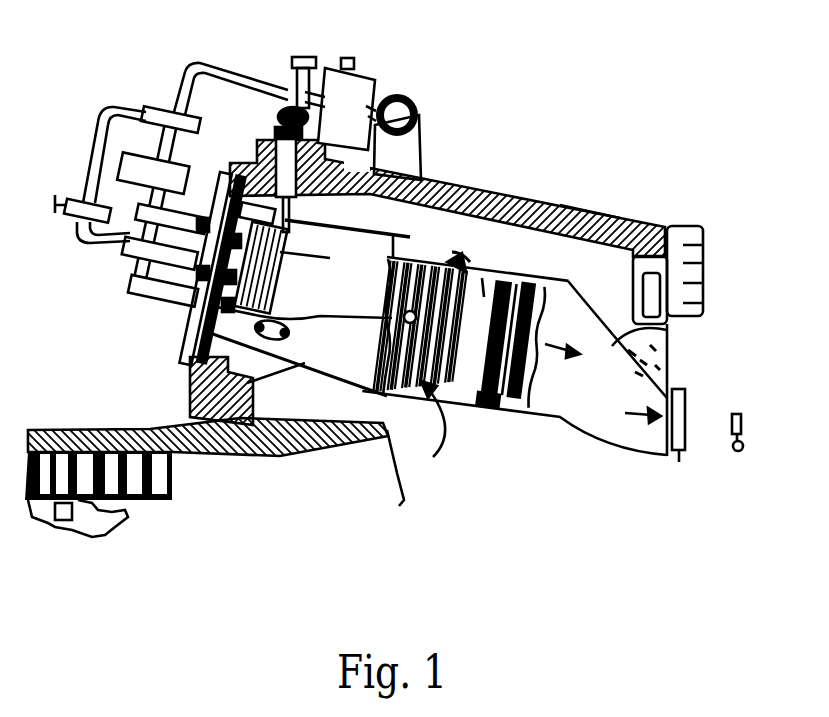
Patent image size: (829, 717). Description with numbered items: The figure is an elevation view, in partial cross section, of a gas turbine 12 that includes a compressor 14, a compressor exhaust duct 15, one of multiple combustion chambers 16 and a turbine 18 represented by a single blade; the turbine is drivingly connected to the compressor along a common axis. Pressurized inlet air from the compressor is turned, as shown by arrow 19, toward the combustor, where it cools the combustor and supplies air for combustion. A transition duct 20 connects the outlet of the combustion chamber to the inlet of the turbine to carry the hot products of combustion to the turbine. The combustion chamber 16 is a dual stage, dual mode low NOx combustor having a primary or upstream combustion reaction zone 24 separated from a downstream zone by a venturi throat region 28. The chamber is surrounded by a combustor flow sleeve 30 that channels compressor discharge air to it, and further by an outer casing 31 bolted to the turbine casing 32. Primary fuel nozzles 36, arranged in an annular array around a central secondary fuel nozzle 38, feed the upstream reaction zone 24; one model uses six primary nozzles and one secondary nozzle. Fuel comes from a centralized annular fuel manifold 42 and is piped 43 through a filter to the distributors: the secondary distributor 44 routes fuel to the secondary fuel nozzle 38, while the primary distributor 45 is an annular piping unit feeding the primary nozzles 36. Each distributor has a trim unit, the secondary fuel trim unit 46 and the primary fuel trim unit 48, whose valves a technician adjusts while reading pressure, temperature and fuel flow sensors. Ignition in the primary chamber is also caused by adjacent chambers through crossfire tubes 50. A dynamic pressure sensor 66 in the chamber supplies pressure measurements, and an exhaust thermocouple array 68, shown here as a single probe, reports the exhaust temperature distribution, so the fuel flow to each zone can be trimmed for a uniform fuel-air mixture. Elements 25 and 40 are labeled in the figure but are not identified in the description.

The gas turbine 12 is at (553, 192).
The compressor 14 is at (177, 487).
The compressor exhaust duct 15 is at (338, 484).
The combustion chamber 16 is at (388, 396).
The turbine 18 is at (688, 417).
The arrow 19 is at (433, 457).
The transition duct 20 is at (597, 397).
The primary combustion reaction zone 24 is at (305, 220).
The piston 25 is at (470, 324).
The venturi throat region 28 is at (355, 250).
The combustor flow sleeve 30 is at (421, 236).
The outer casing 31 is at (584, 211).
The turbine casing 32 is at (705, 268).
The primary fuel nozzles 36 is at (280, 263).
The secondary fuel nozzle 38 is at (214, 210).
The control valve 40 is at (325, 127).
The annular fuel manifold 42 is at (398, 92).
The fuel piping 43 is at (235, 74).
The secondary distributor 44 is at (168, 100).
The primary distributor 45 is at (127, 292).
The secondary fuel trim unit 46 is at (68, 196).
The primary fuel trim unit 48 is at (184, 163).
The crossfire tubes 50 is at (292, 338).
The dynamic pressure sensor 66 is at (336, 269).
The exhaust thermocouple array 68 is at (746, 435).